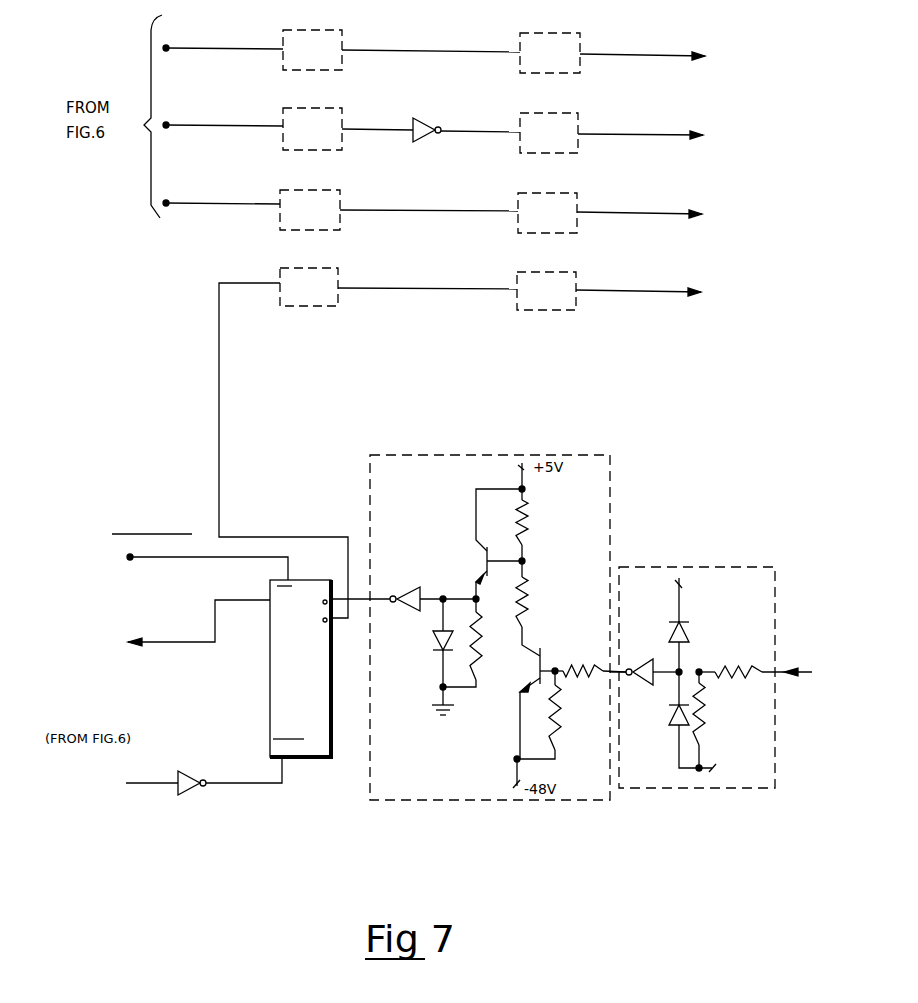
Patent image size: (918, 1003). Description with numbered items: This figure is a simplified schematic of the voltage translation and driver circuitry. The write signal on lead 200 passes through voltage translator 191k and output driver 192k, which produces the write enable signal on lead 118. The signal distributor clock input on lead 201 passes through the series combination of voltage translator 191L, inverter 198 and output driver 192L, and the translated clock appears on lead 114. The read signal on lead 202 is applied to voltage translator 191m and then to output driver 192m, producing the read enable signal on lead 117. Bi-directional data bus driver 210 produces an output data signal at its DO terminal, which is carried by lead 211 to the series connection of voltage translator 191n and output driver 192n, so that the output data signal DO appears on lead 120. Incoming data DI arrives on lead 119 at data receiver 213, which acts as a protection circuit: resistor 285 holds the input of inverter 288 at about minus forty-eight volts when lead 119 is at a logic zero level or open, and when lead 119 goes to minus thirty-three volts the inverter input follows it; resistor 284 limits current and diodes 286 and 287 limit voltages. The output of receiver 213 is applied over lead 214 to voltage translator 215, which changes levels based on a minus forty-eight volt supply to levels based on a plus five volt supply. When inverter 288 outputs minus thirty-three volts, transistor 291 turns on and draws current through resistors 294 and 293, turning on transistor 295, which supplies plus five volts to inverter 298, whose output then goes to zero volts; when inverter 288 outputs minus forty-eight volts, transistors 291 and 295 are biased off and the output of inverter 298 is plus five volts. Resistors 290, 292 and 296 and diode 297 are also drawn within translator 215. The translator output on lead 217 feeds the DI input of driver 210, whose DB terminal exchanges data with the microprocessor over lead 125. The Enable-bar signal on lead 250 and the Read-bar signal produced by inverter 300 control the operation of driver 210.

The voltage translator 191k is at (312, 30).
The voltage translator 191L is at (312, 108).
The voltage translator 191m is at (310, 190).
The voltage translator 191n is at (309, 268).
The output driver 192k is at (550, 33).
The output driver 192L is at (549, 113).
The output driver 192m is at (547, 193).
The output driver 192n is at (546, 272).
The inverter 198 is at (420, 138).
The lead 200 is at (215, 49).
The lead 201 is at (208, 126).
The lead 202 is at (213, 204).
The lead 118 is at (653, 57).
The lead 114 is at (653, 136).
The lead 117 is at (653, 215).
The lead 120 is at (651, 293).
The data out line 211 is at (233, 538).
The enable line 250 is at (188, 557).
The lead 125 is at (180, 642).
The bi-directional data bus driver 210 is at (290, 758).
The lead 217 is at (352, 604).
The inverter 300 is at (190, 790).
The voltage translator 215 is at (420, 800).
The resistor 294 is at (531, 512).
The transistor 295 is at (480, 554).
The resistor 293 is at (532, 588).
The inverter 298 is at (404, 590).
The resistor 3.9K 296 is at (486, 652).
The diode 297 is at (432, 647).
The transistor 291 is at (548, 630).
The resistor 22K 290 is at (580, 680).
The resistor 39K 292 is at (562, 745).
The data receiver 213 is at (664, 788).
The lead 214 is at (616, 672).
The inverter 288 is at (640, 662).
The diode 287 is at (690, 640).
The diode 286 is at (665, 712).
The resistor 285 is at (707, 714).
The resistor 284 is at (740, 684).
The lead 119 is at (800, 677).